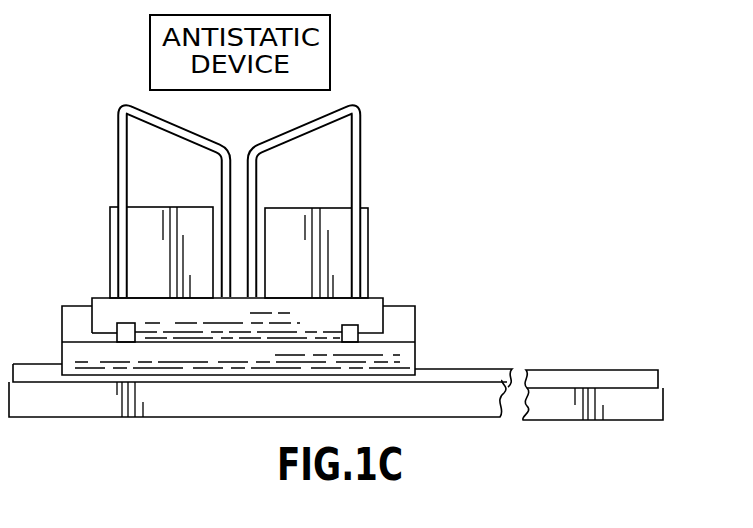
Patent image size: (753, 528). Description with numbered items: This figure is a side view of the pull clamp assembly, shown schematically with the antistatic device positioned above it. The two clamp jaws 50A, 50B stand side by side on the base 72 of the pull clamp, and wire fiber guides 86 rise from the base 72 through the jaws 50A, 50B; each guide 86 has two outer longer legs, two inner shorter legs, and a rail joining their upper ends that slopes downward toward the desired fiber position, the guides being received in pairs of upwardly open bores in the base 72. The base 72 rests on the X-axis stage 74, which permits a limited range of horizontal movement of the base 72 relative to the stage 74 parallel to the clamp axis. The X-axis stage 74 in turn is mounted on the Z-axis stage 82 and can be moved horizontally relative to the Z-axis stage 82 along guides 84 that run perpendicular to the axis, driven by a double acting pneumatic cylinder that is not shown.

The wire fiber guide 86 is at (124, 102).
The clamp jaw 50A is at (108, 243).
The clamp jaw 50B is at (368, 243).
The base 72 is at (382, 298).
The X-axis stage 74 is at (405, 357).
The guides 84 is at (598, 370).
The Z-axis stage 82 is at (663, 405).